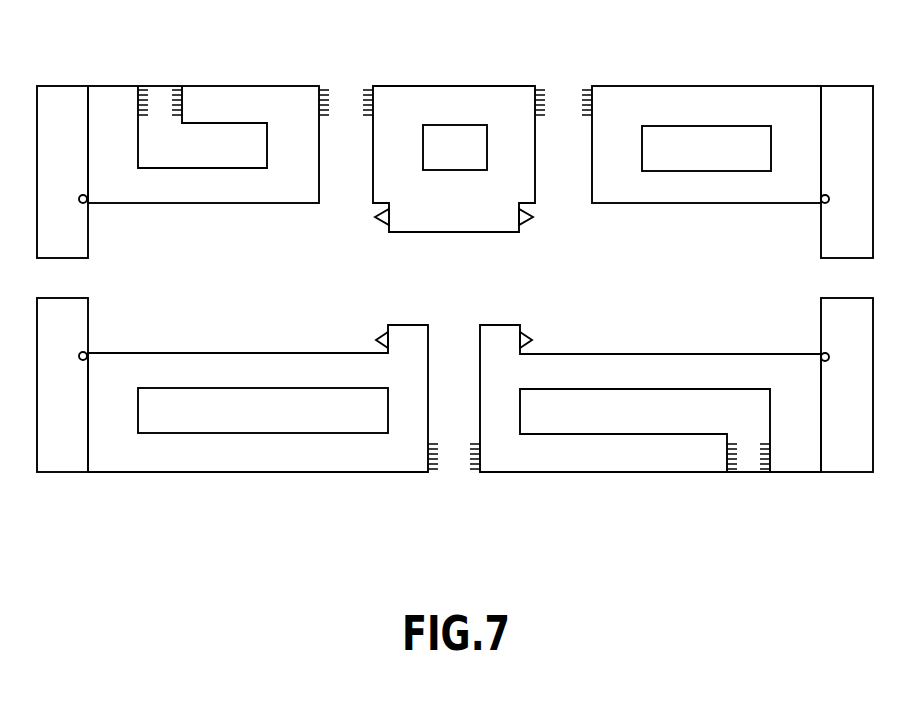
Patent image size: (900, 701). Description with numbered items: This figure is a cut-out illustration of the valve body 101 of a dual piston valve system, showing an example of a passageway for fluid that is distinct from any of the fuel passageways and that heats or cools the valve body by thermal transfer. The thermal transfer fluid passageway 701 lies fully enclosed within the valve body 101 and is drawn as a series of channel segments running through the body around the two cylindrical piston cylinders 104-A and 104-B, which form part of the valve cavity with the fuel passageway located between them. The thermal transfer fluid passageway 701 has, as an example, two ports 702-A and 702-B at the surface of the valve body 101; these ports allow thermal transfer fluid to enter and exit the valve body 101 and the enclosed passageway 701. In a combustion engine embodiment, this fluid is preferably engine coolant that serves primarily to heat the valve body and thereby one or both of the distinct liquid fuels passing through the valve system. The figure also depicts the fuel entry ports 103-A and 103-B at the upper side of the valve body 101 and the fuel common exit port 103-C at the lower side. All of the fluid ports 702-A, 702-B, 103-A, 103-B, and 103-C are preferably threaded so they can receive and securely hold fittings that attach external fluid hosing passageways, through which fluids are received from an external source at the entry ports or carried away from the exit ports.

The valve body 101 is at (454, 279).
The thermal transfer fluid passageway 701 is at (454, 279).
The thermal transfer fluid passageway port 702-A is at (157, 100).
The thermal transfer fluid passageway port 702-B is at (752, 458).
The fuel entry port 103-A is at (342, 107).
The fuel entry port 103-B is at (562, 107).
The fuel common exit port 103-C is at (455, 450).
The piston cylinder 104-A is at (227, 286).
The piston cylinder 104-B is at (710, 284).